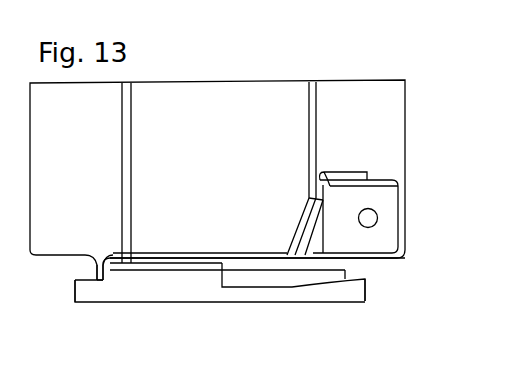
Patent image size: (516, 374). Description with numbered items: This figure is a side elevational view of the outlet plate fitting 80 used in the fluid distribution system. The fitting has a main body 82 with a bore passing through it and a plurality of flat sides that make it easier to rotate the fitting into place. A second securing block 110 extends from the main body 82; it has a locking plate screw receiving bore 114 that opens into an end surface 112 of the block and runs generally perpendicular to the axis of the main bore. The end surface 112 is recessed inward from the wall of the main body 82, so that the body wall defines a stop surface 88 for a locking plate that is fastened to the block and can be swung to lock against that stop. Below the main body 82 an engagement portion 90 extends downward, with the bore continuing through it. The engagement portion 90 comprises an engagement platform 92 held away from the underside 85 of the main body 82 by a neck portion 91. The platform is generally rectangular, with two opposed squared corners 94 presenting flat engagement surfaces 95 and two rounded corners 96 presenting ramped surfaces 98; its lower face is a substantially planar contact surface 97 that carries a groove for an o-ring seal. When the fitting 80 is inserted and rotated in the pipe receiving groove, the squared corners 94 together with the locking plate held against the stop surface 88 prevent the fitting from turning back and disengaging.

The outlet plate fitting 80 is at (278, 57).
The main body 82 is at (337, 92).
The underside 85 is at (378, 258).
The stop surface 88 is at (314, 232).
The engagement portion 90 is at (129, 294).
The neck portion 91 is at (363, 265).
The engagement platform 92 is at (85, 300).
The squared corners 94 is at (72, 287).
The flat engagement surfaces 95 is at (80, 278).
The rounded corners 96 is at (366, 294).
The contact surface 97 is at (197, 298).
The ramped surfaces 98 is at (343, 281).
The second securing block 110 is at (400, 230).
The end surface 112 is at (393, 183).
The locking plate screw receiving bore 114 is at (377, 213).